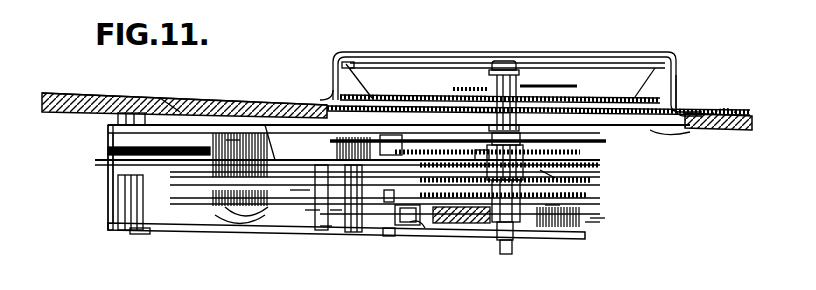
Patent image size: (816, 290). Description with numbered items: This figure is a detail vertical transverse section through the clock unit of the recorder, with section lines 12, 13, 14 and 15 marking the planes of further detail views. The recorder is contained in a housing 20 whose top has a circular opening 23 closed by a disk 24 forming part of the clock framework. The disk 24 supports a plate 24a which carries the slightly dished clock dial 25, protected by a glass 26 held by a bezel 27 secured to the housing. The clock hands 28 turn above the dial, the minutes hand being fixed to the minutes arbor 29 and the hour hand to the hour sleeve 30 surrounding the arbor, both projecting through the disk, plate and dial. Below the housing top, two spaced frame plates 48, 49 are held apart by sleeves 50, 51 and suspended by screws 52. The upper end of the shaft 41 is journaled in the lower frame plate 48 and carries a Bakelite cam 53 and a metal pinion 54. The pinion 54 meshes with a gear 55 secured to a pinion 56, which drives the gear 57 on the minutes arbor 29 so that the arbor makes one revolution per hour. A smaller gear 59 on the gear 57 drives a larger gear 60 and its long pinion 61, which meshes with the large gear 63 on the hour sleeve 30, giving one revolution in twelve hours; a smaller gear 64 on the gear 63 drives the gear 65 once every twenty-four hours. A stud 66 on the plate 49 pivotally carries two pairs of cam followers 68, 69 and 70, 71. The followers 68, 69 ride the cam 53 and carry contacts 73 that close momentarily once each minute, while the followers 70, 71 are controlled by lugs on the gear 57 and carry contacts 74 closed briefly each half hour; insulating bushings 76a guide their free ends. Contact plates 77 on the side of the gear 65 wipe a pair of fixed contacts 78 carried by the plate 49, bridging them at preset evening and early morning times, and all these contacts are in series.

The section line 12- 12 is at (297, 123).
The section line 13- 13 is at (50, 122).
The section line 14- 14 is at (153, 175).
The section line 15- 15 is at (87, 142).
The housing 20 is at (224, 104).
The circular opening 23 is at (326, 100).
The disk 24 is at (668, 136).
The plate 24a is at (668, 100).
The clock dial 25 is at (378, 68).
The glass 26 is at (634, 62).
The bezel 27 is at (683, 67).
The clock hands 28 is at (511, 68).
The minutes arbor 29 is at (532, 88).
The hour sleeve 30 is at (482, 90).
The shaft 41 is at (512, 256).
The lower frame plate 48 is at (240, 236).
The upper frame plate 49 is at (170, 97).
The sleeve 50 is at (115, 204).
The sleeve 51 is at (116, 122).
The screws 52 is at (140, 234).
The cam 53 is at (598, 218).
The pinion 54 is at (492, 215).
The gear 55 is at (592, 222).
The pinion 56 is at (552, 205).
The gear 57 is at (588, 190).
The smaller gear 59 is at (545, 175).
The larger gear 60 is at (590, 181).
The long pinion 61 is at (482, 150).
The large gear 63 is at (480, 141).
The smaller gear 64 is at (590, 166).
The gear 65 is at (388, 202).
The stud 66 is at (227, 223).
The cam follower 68 is at (336, 215).
The cam follower 69 is at (326, 232).
The cam follower 70 is at (272, 222).
The cam follower 71 is at (298, 214).
The contacts 73 is at (416, 228).
The contacts 74 is at (388, 240).
The insulating bushings 76a is at (312, 215).
The contact plates 77 is at (270, 130).
The fixed contacts 78 is at (232, 140).